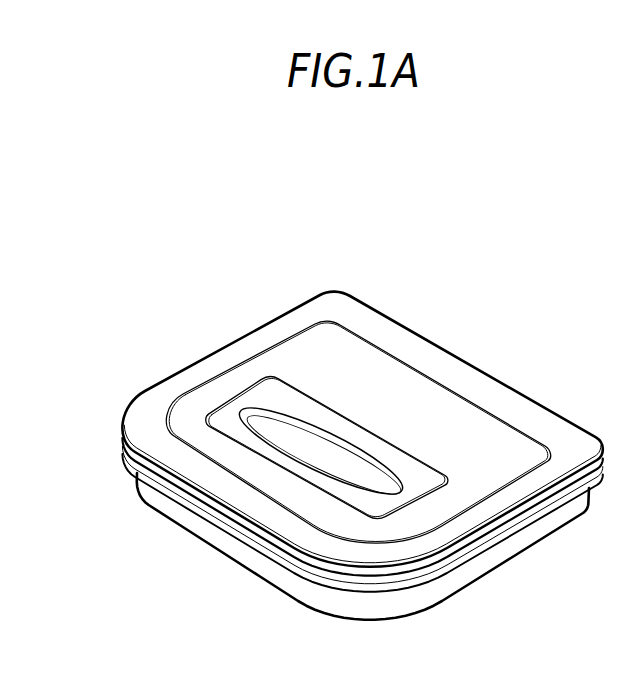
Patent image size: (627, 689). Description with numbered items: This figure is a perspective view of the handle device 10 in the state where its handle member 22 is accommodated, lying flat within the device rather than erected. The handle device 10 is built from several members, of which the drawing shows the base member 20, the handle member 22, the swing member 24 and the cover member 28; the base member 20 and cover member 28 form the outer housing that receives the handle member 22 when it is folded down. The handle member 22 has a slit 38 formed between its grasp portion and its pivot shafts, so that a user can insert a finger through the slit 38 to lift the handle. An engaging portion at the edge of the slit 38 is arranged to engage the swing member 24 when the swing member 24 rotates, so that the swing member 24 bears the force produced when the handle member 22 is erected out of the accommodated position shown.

The handle device 10 is at (362, 456).
The base member 20 is at (519, 404).
The handle member 22 is at (408, 388).
The swing member 24 is at (322, 412).
The cover member 28 is at (533, 533).
The slit 38 is at (292, 383).